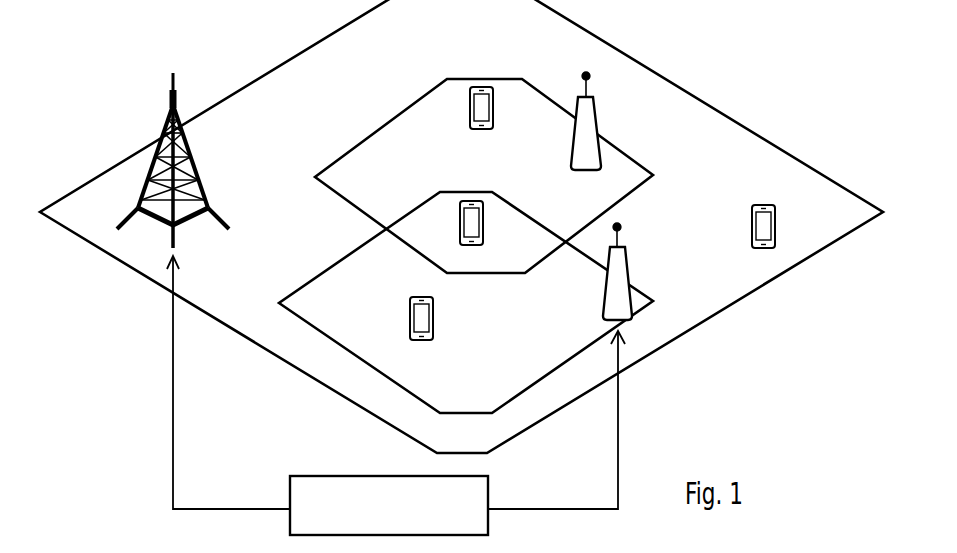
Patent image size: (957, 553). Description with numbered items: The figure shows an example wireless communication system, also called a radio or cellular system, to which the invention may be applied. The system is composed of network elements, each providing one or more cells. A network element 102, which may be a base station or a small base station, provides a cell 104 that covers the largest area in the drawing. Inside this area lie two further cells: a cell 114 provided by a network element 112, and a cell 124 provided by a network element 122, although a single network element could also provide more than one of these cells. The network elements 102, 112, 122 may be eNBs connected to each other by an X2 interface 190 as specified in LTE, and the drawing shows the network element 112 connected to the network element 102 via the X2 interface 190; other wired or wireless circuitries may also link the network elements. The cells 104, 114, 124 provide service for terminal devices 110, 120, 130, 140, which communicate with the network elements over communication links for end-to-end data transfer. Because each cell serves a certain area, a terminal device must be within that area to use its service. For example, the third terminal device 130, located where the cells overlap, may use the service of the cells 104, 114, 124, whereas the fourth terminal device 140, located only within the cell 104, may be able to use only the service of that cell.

The network element 102 is at (168, 100).
The cell 104 is at (92, 233).
The terminal device 110 is at (420, 342).
The network element 112 is at (628, 252).
The cell 114 is at (327, 288).
The terminal device 120 is at (482, 130).
The network element 122 is at (596, 106).
The cell 124 is at (390, 140).
The third terminal device 130 is at (473, 246).
The fourth terminal device 140 is at (763, 250).
The X2 interface 190 is at (339, 521).